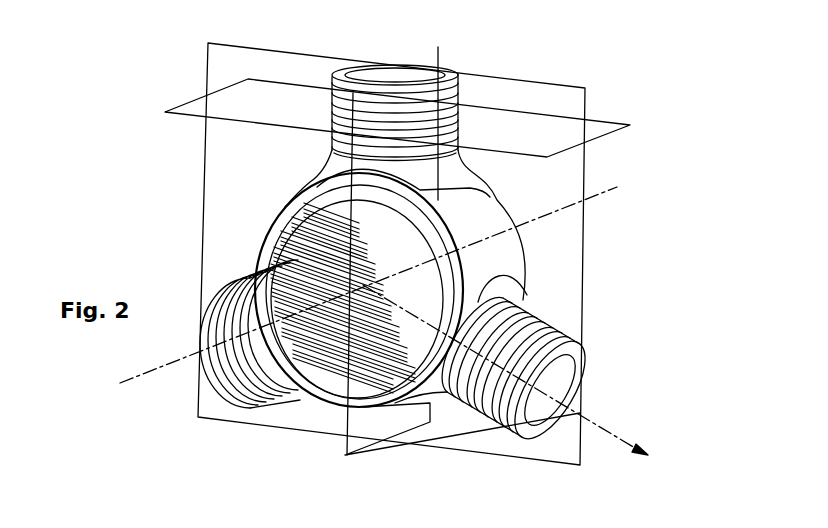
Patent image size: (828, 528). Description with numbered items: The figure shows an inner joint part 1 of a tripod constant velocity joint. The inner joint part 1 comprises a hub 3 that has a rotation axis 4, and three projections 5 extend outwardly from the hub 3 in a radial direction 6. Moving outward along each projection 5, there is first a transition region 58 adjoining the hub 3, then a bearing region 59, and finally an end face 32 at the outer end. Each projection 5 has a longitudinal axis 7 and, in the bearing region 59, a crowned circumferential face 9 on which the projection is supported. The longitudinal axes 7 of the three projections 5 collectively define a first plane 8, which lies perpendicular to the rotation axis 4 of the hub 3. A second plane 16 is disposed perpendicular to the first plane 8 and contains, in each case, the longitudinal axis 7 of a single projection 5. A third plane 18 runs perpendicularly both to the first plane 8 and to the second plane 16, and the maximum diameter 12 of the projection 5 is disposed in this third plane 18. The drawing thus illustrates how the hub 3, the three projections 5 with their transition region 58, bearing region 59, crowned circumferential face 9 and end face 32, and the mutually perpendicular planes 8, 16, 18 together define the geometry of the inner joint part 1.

The inner joint part 1 is at (520, 95).
The hub 3 is at (340, 387).
The rotation axis 4 is at (617, 187).
The projection 5 is at (210, 374).
The radial direction 6 is at (648, 455).
The longitudinal axis 7 is at (580, 413).
The first plane 8 is at (238, 147).
The crowned circumferential face 9 is at (390, 410).
The maximum diameter 12 is at (420, 112).
The second plane 16 is at (425, 63).
The third plane 18 is at (597, 127).
The end face 32 is at (407, 73).
The transition region 58 is at (524, 296).
The bearing region 59 is at (560, 350).